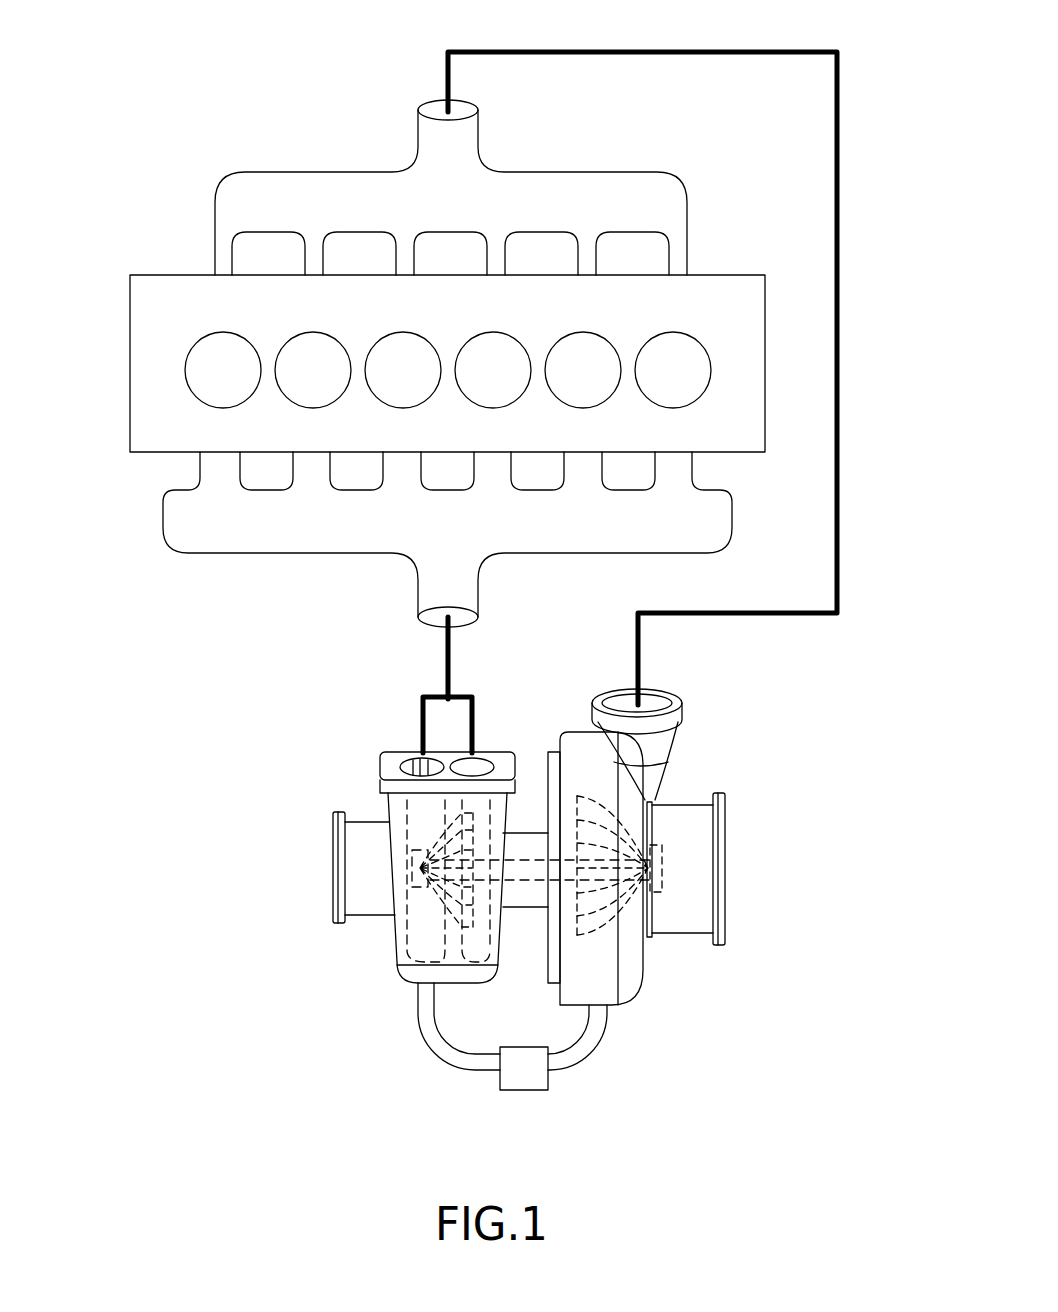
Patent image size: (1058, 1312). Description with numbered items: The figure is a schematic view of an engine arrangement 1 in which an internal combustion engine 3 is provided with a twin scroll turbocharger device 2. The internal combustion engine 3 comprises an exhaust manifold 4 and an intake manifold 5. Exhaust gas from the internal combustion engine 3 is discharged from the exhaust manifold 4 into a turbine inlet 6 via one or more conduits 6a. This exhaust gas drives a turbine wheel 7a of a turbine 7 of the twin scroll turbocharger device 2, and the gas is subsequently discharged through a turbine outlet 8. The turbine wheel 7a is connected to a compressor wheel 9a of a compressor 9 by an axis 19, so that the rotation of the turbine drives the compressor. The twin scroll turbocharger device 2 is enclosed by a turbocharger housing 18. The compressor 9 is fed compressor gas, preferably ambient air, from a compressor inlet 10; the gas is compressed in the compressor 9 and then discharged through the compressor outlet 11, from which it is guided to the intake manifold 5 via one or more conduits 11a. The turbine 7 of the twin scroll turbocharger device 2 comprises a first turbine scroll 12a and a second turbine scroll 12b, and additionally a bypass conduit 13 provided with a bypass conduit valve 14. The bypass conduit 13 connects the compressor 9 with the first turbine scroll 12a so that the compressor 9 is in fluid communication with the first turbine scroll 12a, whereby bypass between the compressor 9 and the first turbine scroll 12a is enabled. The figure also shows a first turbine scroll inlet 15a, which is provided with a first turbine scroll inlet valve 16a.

The engine arrangement 1 is at (203, 78).
The twin scroll turbocharger device 2 is at (733, 1070).
The internal combustion engine 3 is at (155, 202).
The exhaust manifold 4 is at (265, 532).
The intake manifold 5 is at (333, 193).
The turbine inlet 6 is at (408, 737).
The conduits 6a is at (443, 680).
The turbine 7 is at (397, 1002).
The turbine wheel 7a is at (400, 838).
The turbine outlet 8 is at (367, 882).
The compressor 9 is at (650, 1013).
The compressor wheel 9a is at (623, 933).
The compressor inlet 10 is at (695, 830).
The compressor outlet 11 is at (690, 693).
The conduits 11a is at (643, 645).
The first turbine scroll 12a is at (405, 920).
The second turbine scroll 12b is at (480, 937).
The bypass conduit 13 is at (583, 1057).
The bypass conduit valve 14 is at (538, 1093).
The first turbine scroll inlet 15a is at (405, 767).
The first turbine scroll inlet valve 16a is at (417, 765).
The turbocharger housing 18 is at (397, 960).
The axis 19 is at (528, 857).